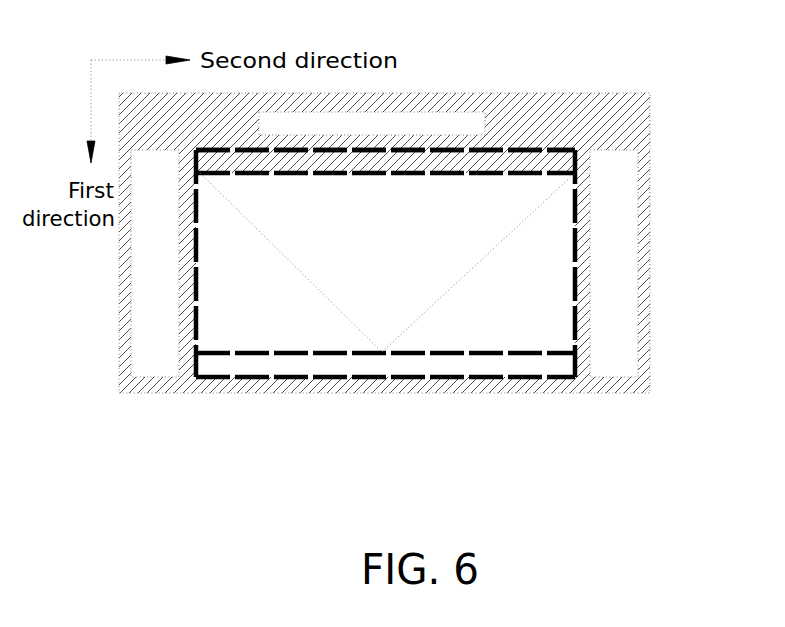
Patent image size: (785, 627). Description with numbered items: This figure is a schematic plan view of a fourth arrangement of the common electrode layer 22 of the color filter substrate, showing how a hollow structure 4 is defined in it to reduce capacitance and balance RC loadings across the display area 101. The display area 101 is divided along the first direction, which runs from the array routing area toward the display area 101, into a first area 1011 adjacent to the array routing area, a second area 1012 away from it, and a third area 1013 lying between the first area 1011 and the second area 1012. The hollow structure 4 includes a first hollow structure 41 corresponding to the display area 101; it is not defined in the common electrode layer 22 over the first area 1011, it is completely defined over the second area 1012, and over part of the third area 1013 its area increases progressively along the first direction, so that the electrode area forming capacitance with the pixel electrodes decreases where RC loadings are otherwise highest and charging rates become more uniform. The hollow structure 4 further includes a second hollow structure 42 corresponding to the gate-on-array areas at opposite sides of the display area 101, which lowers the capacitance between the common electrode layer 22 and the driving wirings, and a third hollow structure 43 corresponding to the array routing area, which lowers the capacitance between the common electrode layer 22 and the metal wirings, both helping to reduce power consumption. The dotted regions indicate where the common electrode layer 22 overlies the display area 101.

The common electrode layer 22 is at (650, 93).
The display area 101 is at (575, 150).
The first area 1011 is at (347, 152).
The second area 1012 is at (397, 366).
The third area 1013 is at (528, 342).
The hollow structure 4 is at (476, 250).
The first hollow structure 41 is at (545, 288).
The second hollow structure 42 is at (608, 260).
The third hollow structure 43 is at (470, 123).